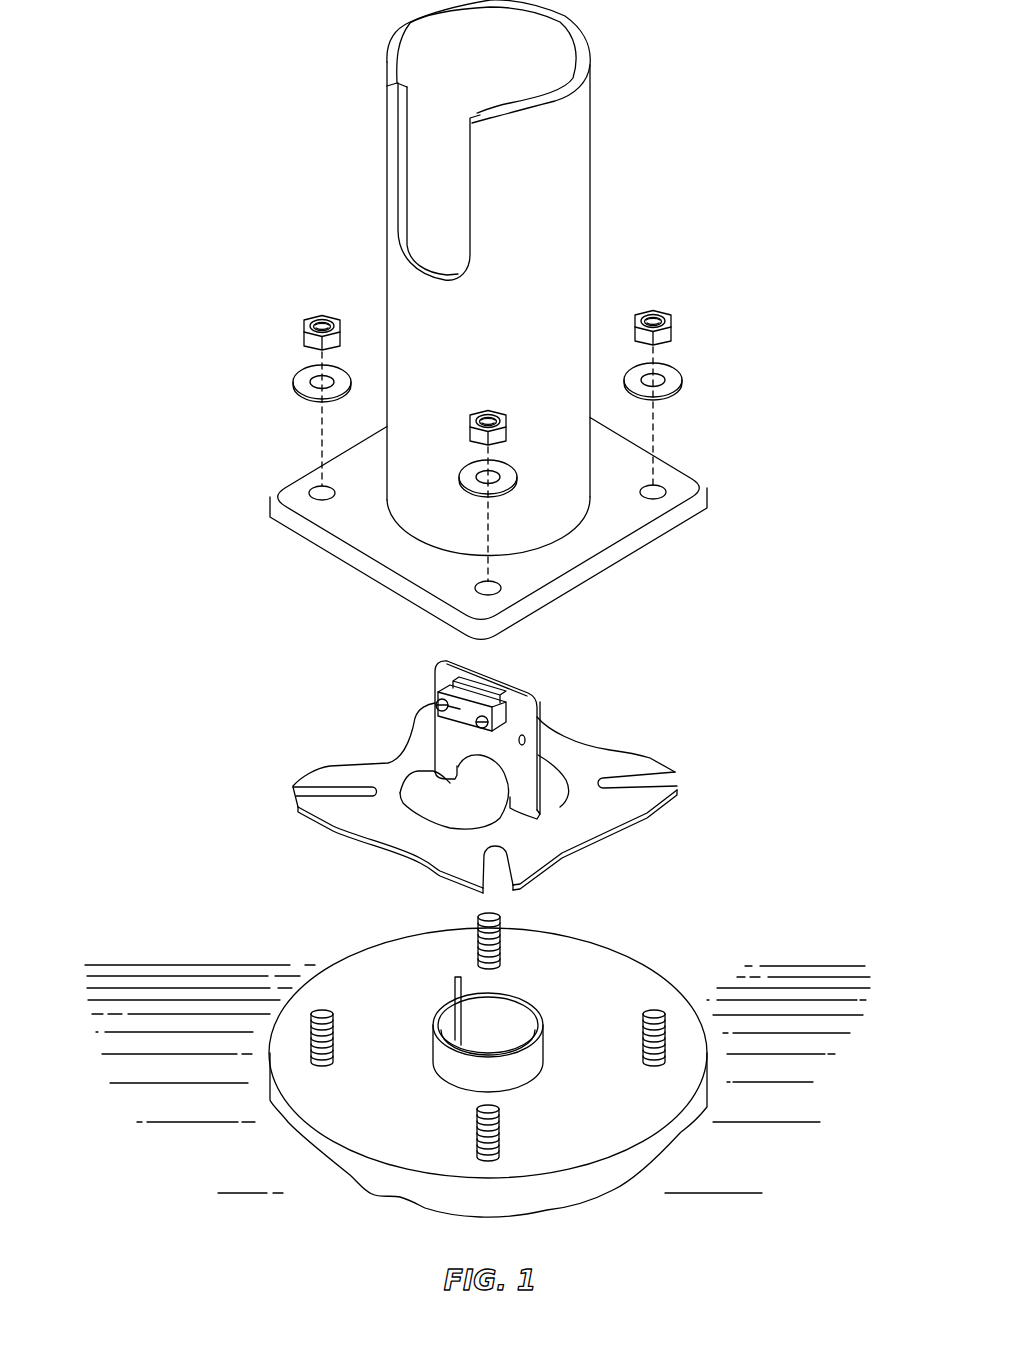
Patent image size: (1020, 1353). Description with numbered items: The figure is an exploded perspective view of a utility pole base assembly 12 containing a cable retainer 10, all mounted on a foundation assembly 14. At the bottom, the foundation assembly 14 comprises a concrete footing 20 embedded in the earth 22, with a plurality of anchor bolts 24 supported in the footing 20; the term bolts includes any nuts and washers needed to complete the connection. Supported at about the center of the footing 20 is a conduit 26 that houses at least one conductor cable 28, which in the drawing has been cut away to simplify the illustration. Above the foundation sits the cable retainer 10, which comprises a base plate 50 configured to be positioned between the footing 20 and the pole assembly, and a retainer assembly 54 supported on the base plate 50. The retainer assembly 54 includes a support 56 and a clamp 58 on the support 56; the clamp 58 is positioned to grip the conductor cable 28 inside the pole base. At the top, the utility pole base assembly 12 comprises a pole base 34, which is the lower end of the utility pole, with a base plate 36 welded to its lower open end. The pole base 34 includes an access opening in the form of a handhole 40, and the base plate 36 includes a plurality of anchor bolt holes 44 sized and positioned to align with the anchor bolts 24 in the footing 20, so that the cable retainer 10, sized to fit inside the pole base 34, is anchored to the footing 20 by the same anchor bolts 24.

The cable retainer 10 is at (611, 746).
The utility pole base assembly 12 is at (675, 491).
The foundation assembly 14 is at (645, 962).
The concrete footing 20 is at (548, 950).
The earth 22 is at (820, 968).
The anchor bolts 24 is at (322, 1012).
The conduit 26 is at (535, 1055).
The conductor cable 28 is at (455, 992).
The pole base 34 is at (582, 190).
The base plate 36 is at (367, 537).
The handhole 40 is at (408, 156).
The anchor bolt holes 44 is at (478, 585).
The base plate 50 is at (585, 818).
The retainer assembly 54 is at (518, 702).
The support 56 is at (443, 757).
The clamp 58 is at (436, 705).